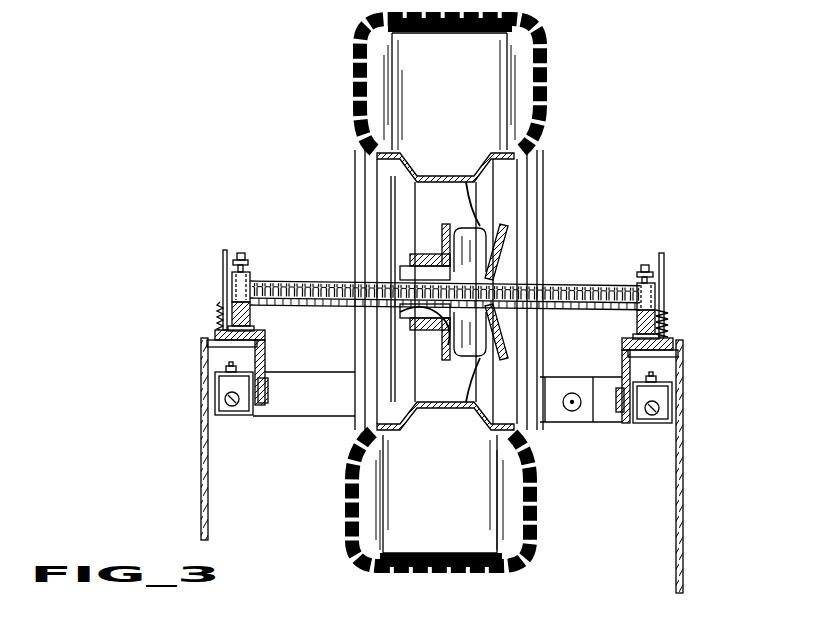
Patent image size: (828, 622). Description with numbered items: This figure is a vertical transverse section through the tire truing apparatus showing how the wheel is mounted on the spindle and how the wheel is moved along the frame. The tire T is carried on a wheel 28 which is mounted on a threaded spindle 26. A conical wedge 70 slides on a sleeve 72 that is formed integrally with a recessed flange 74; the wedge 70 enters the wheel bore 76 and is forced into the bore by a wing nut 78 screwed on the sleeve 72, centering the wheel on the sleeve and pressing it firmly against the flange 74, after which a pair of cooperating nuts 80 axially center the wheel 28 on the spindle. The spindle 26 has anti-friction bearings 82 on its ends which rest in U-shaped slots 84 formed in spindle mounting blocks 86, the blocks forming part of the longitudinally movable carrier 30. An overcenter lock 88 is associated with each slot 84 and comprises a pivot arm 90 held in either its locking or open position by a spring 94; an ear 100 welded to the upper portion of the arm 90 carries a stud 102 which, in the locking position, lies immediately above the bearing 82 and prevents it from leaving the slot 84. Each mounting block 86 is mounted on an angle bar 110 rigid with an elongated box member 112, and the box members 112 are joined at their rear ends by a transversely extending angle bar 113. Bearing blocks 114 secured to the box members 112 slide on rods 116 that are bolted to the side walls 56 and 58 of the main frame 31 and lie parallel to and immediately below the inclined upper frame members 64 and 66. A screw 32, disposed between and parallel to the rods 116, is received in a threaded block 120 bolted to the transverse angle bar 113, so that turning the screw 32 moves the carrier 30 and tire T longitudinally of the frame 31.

The tire T is at (521, 21).
The spindle 26 is at (560, 287).
The wheel 28 is at (522, 154).
The carrier 30 is at (257, 418).
The main frame 31 is at (687, 521).
The screw 32 is at (571, 392).
The side wall 56 is at (200, 458).
The side wall 58 is at (683, 458).
The upper frame member 64 is at (212, 340).
The upper frame member 66 is at (683, 353).
The conical wedge 70 is at (463, 353).
The sleeve 72 is at (427, 262).
The recessed flange 74 is at (440, 341).
The wheel bore 76 is at (418, 309).
The wing nut 78 is at (506, 242).
The nuts 80 is at (450, 274).
The anti-friction bearings 82 is at (232, 283).
The U-shaped slots 84 is at (252, 303).
The spindle mounting blocks 86 is at (254, 329).
The overcenter lock 88 is at (221, 249).
The pivot arm 90 is at (222, 258).
The spring 94 is at (218, 304).
The ear 100 is at (247, 265).
The stud 102 is at (250, 267).
The angle bar 110 is at (263, 374).
The box member 112 is at (215, 412).
The transverse angle bar 113 is at (335, 418).
The bearing blocks 114 is at (227, 378).
The rods 116 is at (227, 402).
The threaded block 120 is at (566, 423).